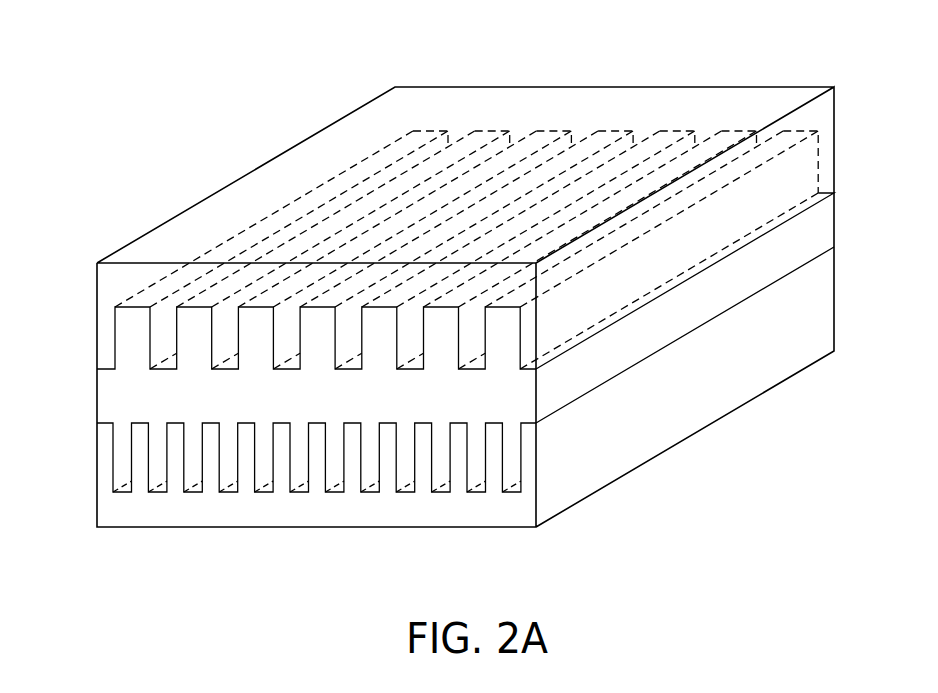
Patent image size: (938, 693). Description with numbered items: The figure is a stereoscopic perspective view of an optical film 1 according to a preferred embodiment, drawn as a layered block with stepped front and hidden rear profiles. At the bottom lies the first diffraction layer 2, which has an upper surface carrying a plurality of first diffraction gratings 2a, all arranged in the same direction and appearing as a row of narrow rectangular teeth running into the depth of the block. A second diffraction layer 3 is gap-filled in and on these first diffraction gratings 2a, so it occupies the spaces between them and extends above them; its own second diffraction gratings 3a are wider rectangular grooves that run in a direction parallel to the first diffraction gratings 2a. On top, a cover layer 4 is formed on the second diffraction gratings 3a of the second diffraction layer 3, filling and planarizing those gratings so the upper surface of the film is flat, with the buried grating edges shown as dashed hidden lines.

The optical film 1 is at (41, 30).
The first diffraction layer 2 is at (122, 510).
The first diffraction gratings 2a is at (528, 457).
The second diffraction layer 3 is at (122, 405).
The second diffraction gratings 3a is at (510, 333).
The cover layer 4 is at (122, 282).